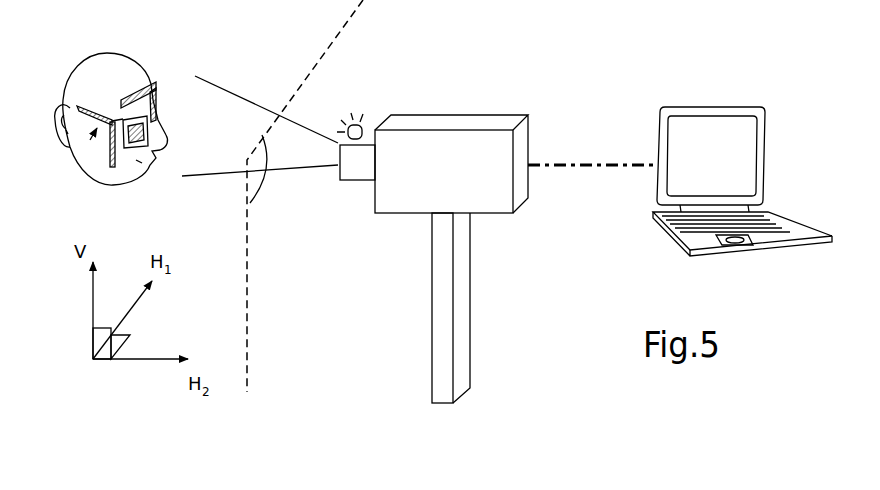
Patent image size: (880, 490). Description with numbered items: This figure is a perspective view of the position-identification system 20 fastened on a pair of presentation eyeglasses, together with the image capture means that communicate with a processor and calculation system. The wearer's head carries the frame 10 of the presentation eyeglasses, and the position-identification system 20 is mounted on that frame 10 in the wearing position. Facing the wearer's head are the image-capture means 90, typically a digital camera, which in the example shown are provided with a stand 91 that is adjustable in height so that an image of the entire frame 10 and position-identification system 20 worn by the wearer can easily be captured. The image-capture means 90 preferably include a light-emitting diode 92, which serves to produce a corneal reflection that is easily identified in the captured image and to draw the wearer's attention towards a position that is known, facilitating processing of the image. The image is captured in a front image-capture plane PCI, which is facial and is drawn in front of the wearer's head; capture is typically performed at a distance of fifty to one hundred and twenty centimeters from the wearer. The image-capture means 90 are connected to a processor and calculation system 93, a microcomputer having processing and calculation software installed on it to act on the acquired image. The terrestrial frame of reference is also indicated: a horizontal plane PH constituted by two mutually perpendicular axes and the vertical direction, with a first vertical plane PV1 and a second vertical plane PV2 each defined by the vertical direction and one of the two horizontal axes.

The frame 10 is at (66, 146).
The position-identification system 20 is at (149, 76).
The image capture means 90 is at (437, 111).
The stand 91 is at (462, 322).
The light-emitting diode (LED) 92 is at (362, 126).
The processor and calculation system 93 is at (731, 123).
The image-capture plane PCI is at (266, 186).
The first vertical plane PV1 is at (98, 338).
The second vertical plane PV2 is at (124, 368).
The horizontal plane PH is at (122, 346).